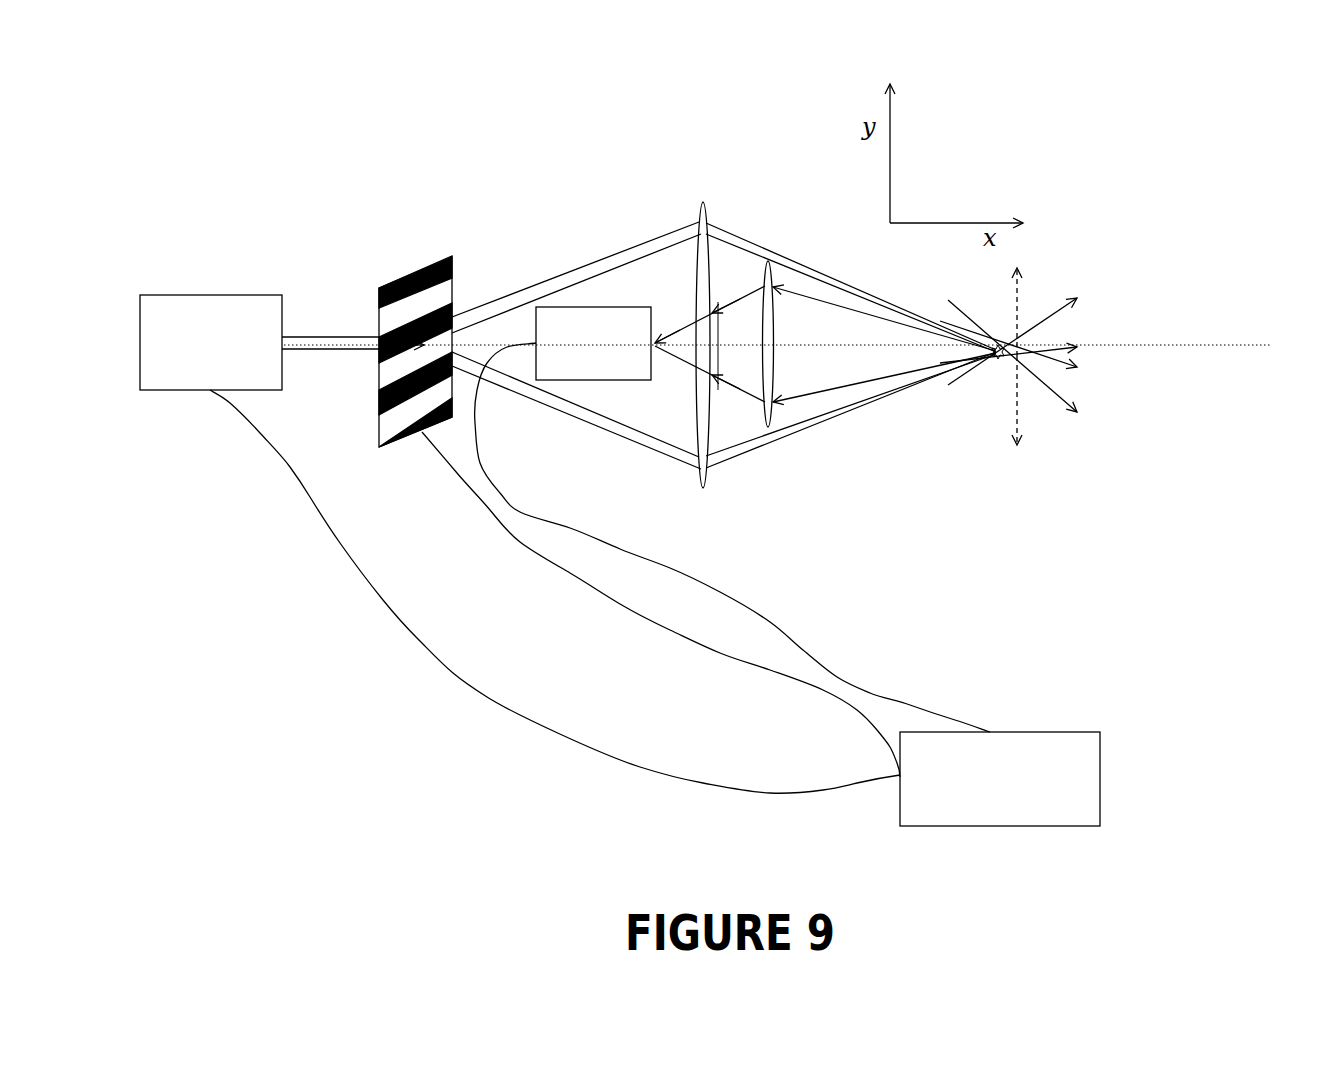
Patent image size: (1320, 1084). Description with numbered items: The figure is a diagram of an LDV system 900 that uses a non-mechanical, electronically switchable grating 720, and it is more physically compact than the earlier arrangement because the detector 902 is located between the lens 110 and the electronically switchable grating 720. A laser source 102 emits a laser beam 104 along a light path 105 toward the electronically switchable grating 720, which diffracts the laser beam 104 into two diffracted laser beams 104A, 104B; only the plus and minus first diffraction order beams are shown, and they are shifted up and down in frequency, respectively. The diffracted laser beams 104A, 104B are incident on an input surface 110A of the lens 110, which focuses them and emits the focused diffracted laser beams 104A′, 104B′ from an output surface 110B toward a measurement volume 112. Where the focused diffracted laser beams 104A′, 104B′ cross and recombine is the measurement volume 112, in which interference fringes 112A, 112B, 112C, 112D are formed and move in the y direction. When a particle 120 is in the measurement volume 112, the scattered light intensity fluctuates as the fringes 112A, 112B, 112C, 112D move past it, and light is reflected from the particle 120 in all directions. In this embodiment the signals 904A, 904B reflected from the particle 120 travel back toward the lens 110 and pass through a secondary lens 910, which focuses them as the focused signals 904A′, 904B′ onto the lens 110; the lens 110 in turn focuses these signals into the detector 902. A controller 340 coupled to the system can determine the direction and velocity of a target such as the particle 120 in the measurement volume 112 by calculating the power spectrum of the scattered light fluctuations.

The LDV system 900 is at (441, 128).
The laser source 102 is at (232, 295).
The laser beam 104 is at (343, 343).
The electronically switchable grating 720 is at (412, 272).
The detector 902 is at (535, 328).
The diffracted laser beam 104A is at (577, 275).
The diffracted laser beam 104B is at (622, 425).
The focused diffracted laser beam 104A′ is at (762, 260).
The focused diffracted laser beam 104B′ is at (778, 445).
The lens 110 is at (707, 492).
The input surface 110A is at (693, 437).
The output surface 110B is at (742, 400).
The focused signal 904A′ is at (735, 292).
The focused signal 904B′ is at (769, 445).
The signal 904A is at (868, 320).
The signal 904B is at (880, 378).
The secondary lens 910 is at (771, 261).
The measurement volume 112 is at (995, 345).
The fringe 112A is at (975, 347).
The fringe 112B is at (1028, 347).
The fringe 112C is at (1028, 358).
The fringe 112D is at (975, 352).
The particle 120 is at (995, 338).
The light path 105 is at (1182, 343).
The controller 340 is at (1100, 801).